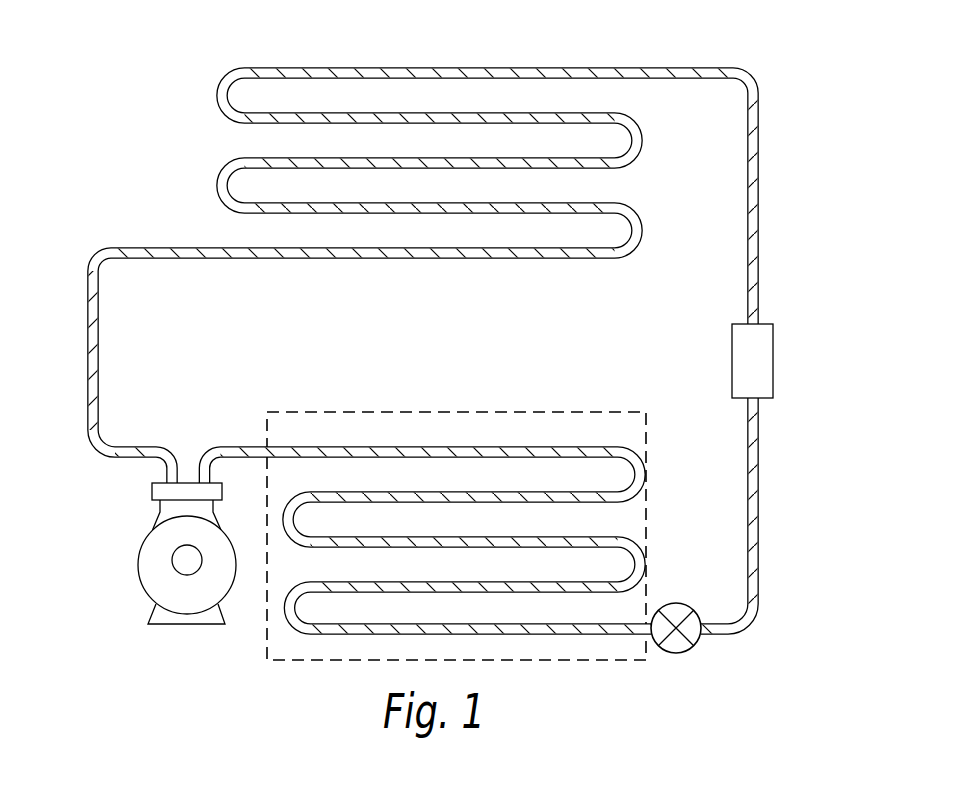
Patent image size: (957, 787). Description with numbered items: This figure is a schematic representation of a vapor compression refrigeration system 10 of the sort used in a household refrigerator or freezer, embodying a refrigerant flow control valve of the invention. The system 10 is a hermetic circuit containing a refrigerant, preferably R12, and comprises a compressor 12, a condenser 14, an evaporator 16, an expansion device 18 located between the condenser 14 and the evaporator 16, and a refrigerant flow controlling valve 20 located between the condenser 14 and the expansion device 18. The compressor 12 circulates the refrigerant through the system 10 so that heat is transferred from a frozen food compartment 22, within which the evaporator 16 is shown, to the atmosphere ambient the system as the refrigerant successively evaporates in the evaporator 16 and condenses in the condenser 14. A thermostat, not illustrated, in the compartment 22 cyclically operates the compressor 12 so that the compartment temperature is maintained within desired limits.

The vapor compression refrigeration system 10 is at (775, 508).
The compressor 12 is at (127, 580).
The condenser 14 is at (426, 52).
The evaporator 16 is at (506, 430).
The expansion device 18 is at (680, 648).
The refrigerant flow controlling valve 20 is at (793, 369).
The frozen food compartment 22 is at (325, 410).